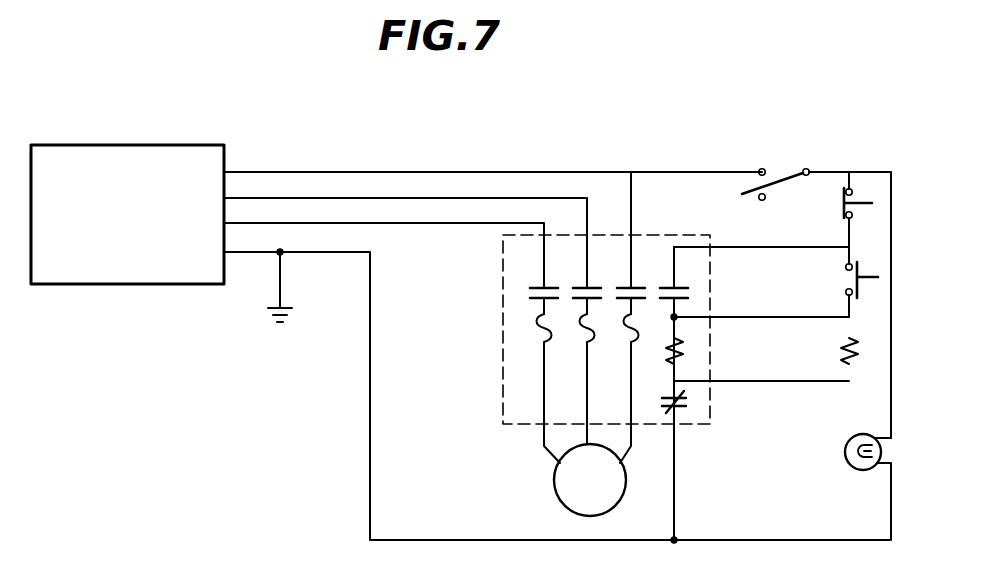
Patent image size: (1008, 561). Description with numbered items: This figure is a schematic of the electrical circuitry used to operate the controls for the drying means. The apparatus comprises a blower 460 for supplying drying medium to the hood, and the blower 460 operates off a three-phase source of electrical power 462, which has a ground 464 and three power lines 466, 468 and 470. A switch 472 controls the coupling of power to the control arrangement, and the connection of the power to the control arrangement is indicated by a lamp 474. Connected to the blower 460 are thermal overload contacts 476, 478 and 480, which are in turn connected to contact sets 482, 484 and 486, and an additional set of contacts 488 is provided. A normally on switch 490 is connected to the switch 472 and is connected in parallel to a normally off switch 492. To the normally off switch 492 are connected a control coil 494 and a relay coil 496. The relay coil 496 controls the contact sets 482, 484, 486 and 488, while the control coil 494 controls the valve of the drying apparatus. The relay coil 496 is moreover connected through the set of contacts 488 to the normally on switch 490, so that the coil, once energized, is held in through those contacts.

The blower 460 is at (557, 488).
The three-phase source of electrical power 462 is at (133, 147).
The ground 464 is at (283, 281).
The power line 466 is at (343, 169).
The power line 468 is at (428, 198).
The power line 470 is at (398, 226).
The switch 472 is at (788, 170).
The lamp 474 is at (846, 454).
The thermal overload contact 476 is at (538, 340).
The thermal overload contact 478 is at (580, 344).
The thermal overload contact 480 is at (632, 342).
The contact set 482 is at (532, 296).
The contact set 484 is at (574, 287).
The contact set 486 is at (618, 288).
The additional set of contacts 488 is at (661, 288).
The normally on switch 490 is at (842, 204).
The normally off switch 492 is at (845, 280).
The control coil 494 is at (842, 345).
The relay coil 496 is at (682, 345).